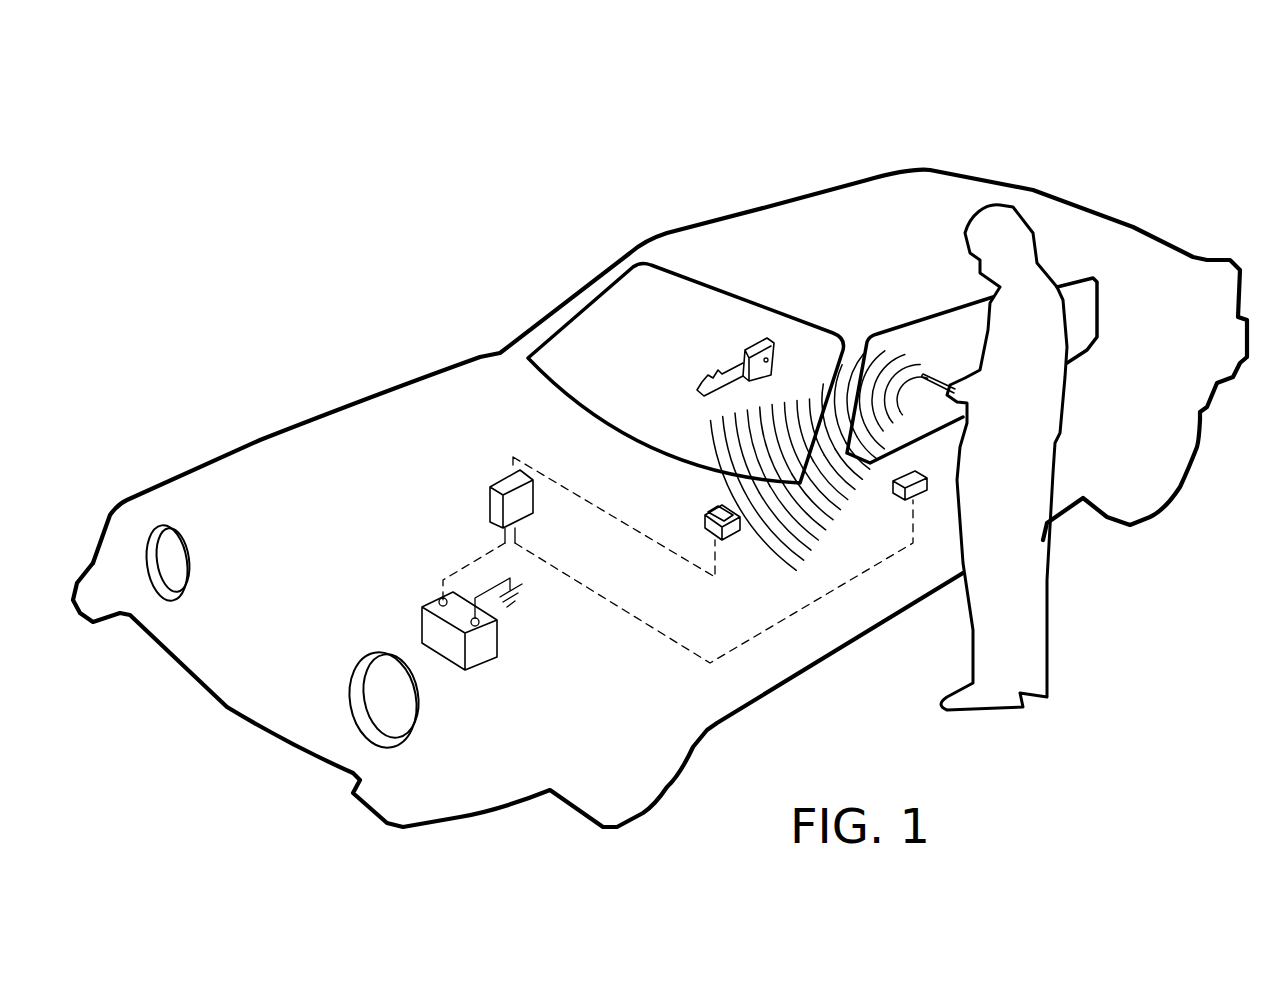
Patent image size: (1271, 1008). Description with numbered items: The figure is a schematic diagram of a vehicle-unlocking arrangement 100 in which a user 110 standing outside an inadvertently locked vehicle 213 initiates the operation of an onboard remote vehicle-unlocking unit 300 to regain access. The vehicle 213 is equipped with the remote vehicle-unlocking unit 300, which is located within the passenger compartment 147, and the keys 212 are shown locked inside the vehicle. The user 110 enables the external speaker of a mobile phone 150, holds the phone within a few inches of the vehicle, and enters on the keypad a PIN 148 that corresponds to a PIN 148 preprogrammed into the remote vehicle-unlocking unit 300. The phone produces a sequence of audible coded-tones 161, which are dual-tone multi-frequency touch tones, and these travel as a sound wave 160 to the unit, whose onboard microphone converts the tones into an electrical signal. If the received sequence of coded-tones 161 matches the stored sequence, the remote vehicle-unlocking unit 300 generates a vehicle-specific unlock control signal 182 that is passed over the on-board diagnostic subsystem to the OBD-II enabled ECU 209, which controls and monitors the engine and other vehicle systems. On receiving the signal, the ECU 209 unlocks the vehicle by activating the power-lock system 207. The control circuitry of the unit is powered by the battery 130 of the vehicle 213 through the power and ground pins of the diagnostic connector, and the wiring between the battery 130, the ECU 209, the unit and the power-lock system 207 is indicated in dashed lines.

The vehicle system 100 is at (672, 453).
The vehicle 213 is at (1187, 247).
The passenger compartment 147 is at (680, 307).
The keys 212 is at (708, 371).
The mobile phone 150 is at (938, 370).
The sound wave 160 is at (692, 434).
The audible coded-tones 161 is at (762, 555).
The remote vehicle-unlocking unit 300 is at (686, 500).
The PIN 148 is at (707, 513).
The ECU 209 is at (503, 485).
The battery 130 is at (443, 597).
The unlock control signal 182 is at (640, 533).
The power-lock system 207 is at (893, 493).
The user 110 is at (1048, 580).